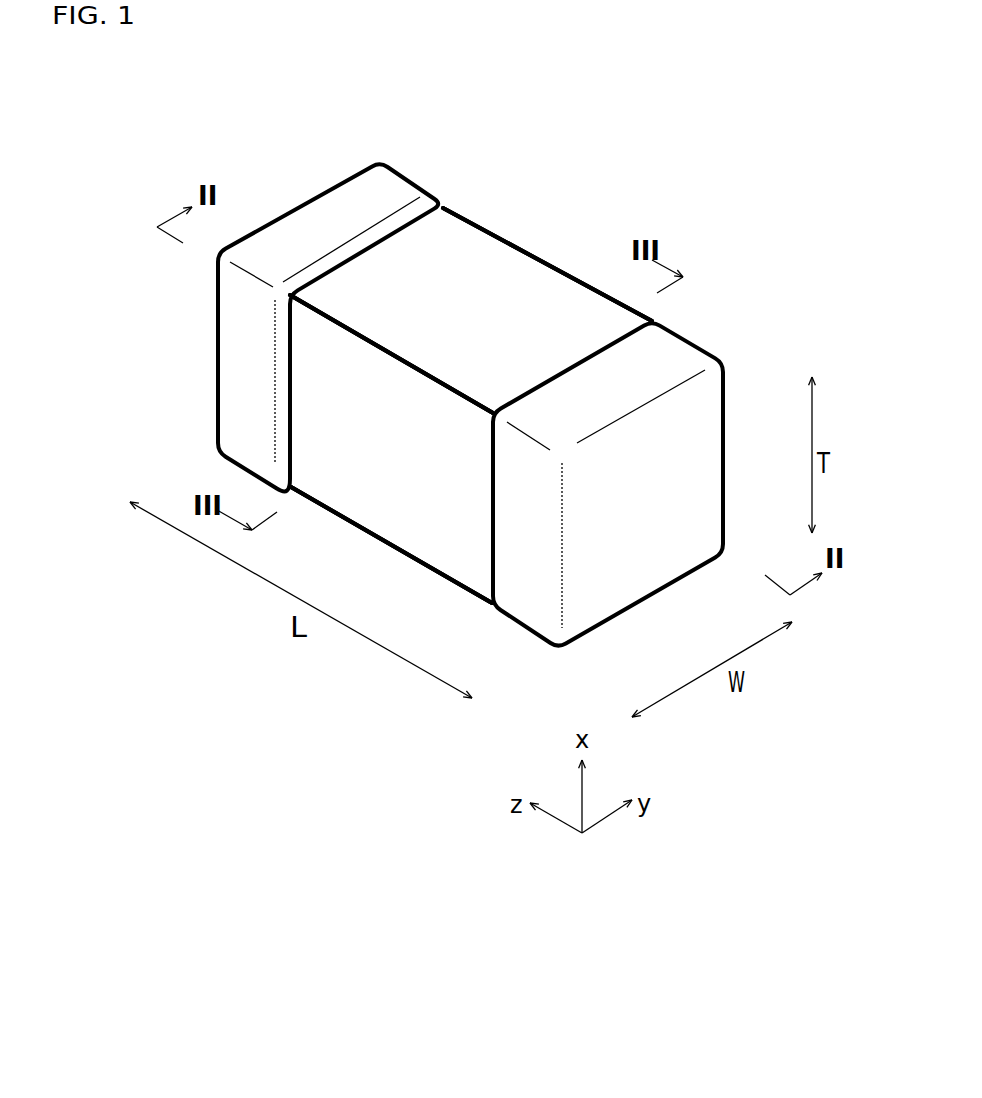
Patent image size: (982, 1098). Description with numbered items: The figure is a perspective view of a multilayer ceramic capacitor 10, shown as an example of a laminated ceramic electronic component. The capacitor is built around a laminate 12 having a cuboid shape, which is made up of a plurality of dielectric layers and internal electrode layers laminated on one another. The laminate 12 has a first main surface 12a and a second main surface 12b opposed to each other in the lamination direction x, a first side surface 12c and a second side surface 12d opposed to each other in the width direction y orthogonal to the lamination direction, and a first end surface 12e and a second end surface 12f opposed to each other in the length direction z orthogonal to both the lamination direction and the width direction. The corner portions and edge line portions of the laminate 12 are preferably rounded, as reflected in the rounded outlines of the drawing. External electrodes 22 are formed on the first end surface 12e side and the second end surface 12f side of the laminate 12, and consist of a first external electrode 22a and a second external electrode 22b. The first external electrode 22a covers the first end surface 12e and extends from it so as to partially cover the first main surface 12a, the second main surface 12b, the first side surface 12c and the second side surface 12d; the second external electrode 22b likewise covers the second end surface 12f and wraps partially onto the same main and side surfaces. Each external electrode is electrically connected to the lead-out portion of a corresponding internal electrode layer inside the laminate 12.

The multilayer ceramic capacitor 10 is at (216, 133).
The laminate 12 is at (533, 259).
The first main surface 12a is at (487, 262).
The second main surface 12b is at (452, 542).
The first side surface 12c is at (372, 493).
The second side surface 12d is at (562, 308).
The first end surface 12e is at (323, 235).
The second end surface 12f is at (673, 452).
The external electrodes 22 is at (362, 823).
The first external electrode 22a is at (340, 198).
The second external electrode 22b is at (620, 588).